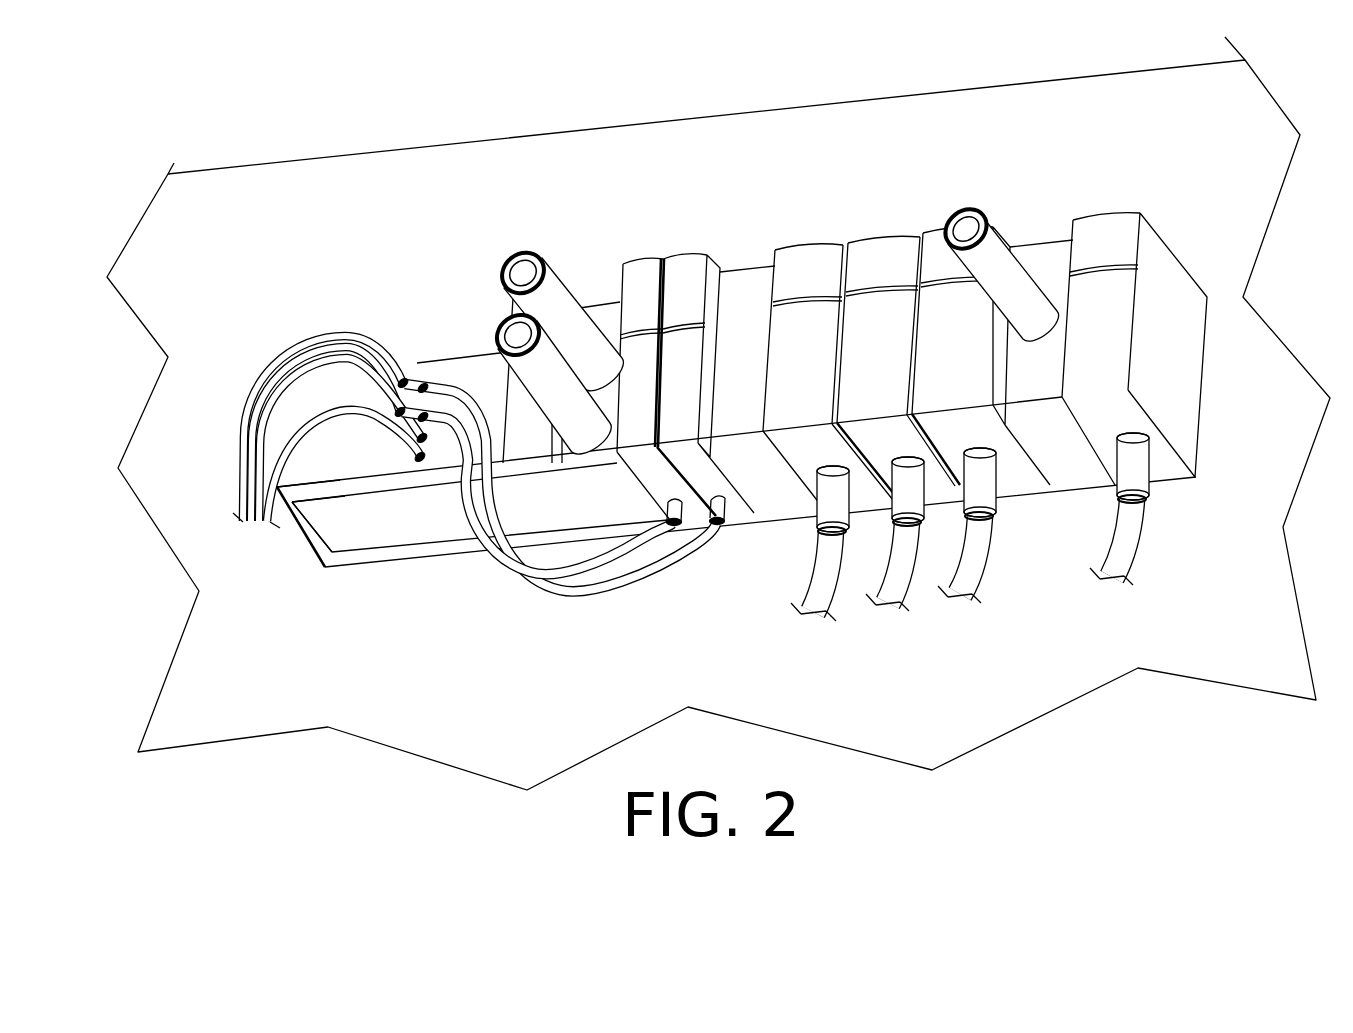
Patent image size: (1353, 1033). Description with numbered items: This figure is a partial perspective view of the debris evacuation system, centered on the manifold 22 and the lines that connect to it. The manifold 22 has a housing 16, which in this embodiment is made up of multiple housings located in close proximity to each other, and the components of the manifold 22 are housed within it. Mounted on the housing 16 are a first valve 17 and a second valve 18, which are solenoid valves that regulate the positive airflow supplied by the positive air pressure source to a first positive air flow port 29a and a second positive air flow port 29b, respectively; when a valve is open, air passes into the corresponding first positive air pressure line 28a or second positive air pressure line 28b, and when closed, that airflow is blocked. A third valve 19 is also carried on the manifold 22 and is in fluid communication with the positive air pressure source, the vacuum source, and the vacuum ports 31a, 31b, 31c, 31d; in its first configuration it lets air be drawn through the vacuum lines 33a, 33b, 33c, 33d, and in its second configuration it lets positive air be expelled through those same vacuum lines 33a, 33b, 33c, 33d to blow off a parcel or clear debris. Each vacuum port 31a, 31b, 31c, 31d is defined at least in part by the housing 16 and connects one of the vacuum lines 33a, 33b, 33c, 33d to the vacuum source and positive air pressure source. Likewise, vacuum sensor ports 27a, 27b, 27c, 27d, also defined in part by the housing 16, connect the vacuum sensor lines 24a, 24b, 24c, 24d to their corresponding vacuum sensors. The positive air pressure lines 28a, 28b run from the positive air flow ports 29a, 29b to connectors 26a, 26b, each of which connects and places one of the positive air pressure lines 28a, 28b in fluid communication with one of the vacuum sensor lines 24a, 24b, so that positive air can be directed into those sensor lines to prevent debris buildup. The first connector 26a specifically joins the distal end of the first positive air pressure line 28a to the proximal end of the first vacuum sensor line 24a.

The housing 16 is at (685, 265).
The first valve 17 is at (551, 275).
The second valve 18 is at (543, 349).
The third valve 19 is at (989, 241).
The manifold 22 is at (1036, 245).
The vacuum sensor line 24a is at (310, 345).
The vacuum sensor line 24b is at (263, 427).
The vacuum sensor line 24c is at (377, 345).
The vacuum sensor line 24d is at (293, 450).
The first connector 26a is at (423, 385).
The connector 26b is at (302, 526).
The vacuum sensor port 27a is at (445, 388).
The vacuum sensor port 27b is at (428, 442).
The vacuum sensor port 27c is at (406, 380).
The vacuum sensor port 27d is at (420, 460).
The first positive air pressure line 28a is at (533, 578).
The second positive air pressure line 28b is at (580, 590).
The first positive air flow port 29a is at (678, 498).
The second positive air flow port 29b is at (720, 498).
The vacuum port 31a is at (830, 470).
The vacuum port 31b is at (895, 460).
The vacuum port 31c is at (990, 452).
The vacuum port 31d is at (1140, 428).
The vacuum line 33a is at (838, 580).
The vacuum line 33b is at (933, 588).
The vacuum line 33c is at (977, 566).
The vacuum line 33d is at (1135, 513).